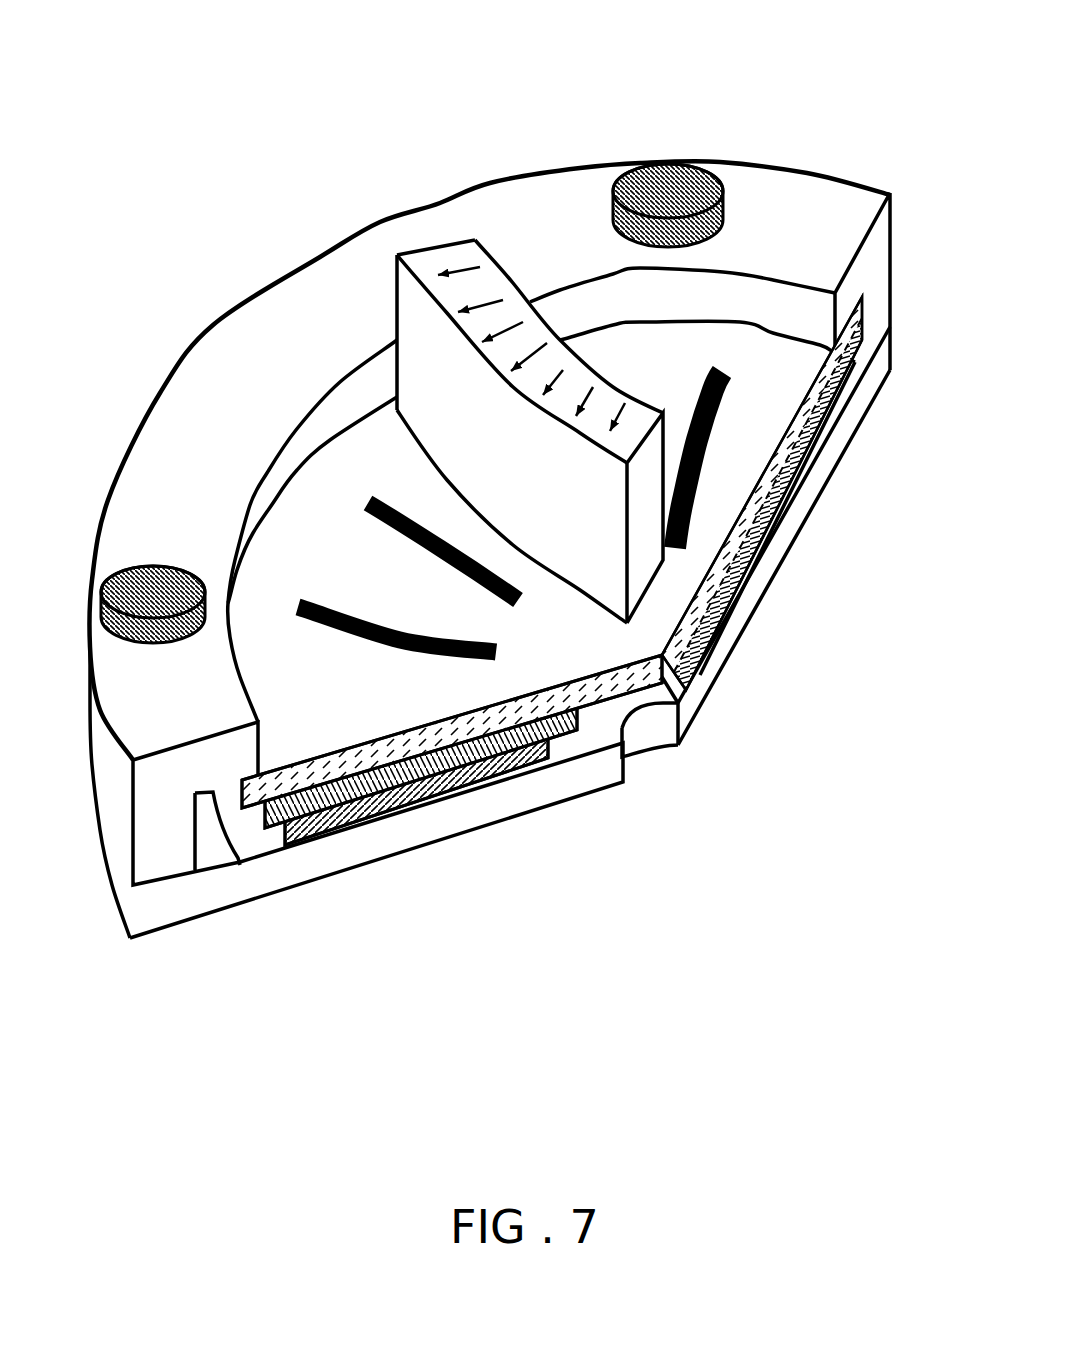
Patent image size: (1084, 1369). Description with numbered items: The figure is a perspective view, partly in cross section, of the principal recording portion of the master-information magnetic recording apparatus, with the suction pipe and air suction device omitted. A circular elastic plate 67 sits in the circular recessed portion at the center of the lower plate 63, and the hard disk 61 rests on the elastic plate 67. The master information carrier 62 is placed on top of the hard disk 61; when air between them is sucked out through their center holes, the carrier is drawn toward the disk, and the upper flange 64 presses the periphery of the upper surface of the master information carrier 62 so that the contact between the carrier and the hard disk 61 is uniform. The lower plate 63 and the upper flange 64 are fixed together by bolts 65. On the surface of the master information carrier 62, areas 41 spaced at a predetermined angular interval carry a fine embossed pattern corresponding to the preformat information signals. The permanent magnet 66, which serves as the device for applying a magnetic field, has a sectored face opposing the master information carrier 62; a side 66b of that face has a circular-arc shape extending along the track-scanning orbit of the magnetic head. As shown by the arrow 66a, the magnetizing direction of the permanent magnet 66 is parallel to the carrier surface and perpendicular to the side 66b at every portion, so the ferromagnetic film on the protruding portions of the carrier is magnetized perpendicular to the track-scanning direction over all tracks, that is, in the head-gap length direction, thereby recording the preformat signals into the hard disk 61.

The areas 41 is at (310, 600).
The hard disk 61 is at (527, 800).
The master information carrier 62 is at (627, 760).
The lower plate 63 is at (430, 827).
The upper flange 64 is at (327, 283).
The bolts 65 is at (640, 170).
The permanent magnet 66 is at (405, 258).
The arrow 66a is at (510, 325).
The side 66b is at (556, 580).
The elastic plate 67 is at (337, 832).